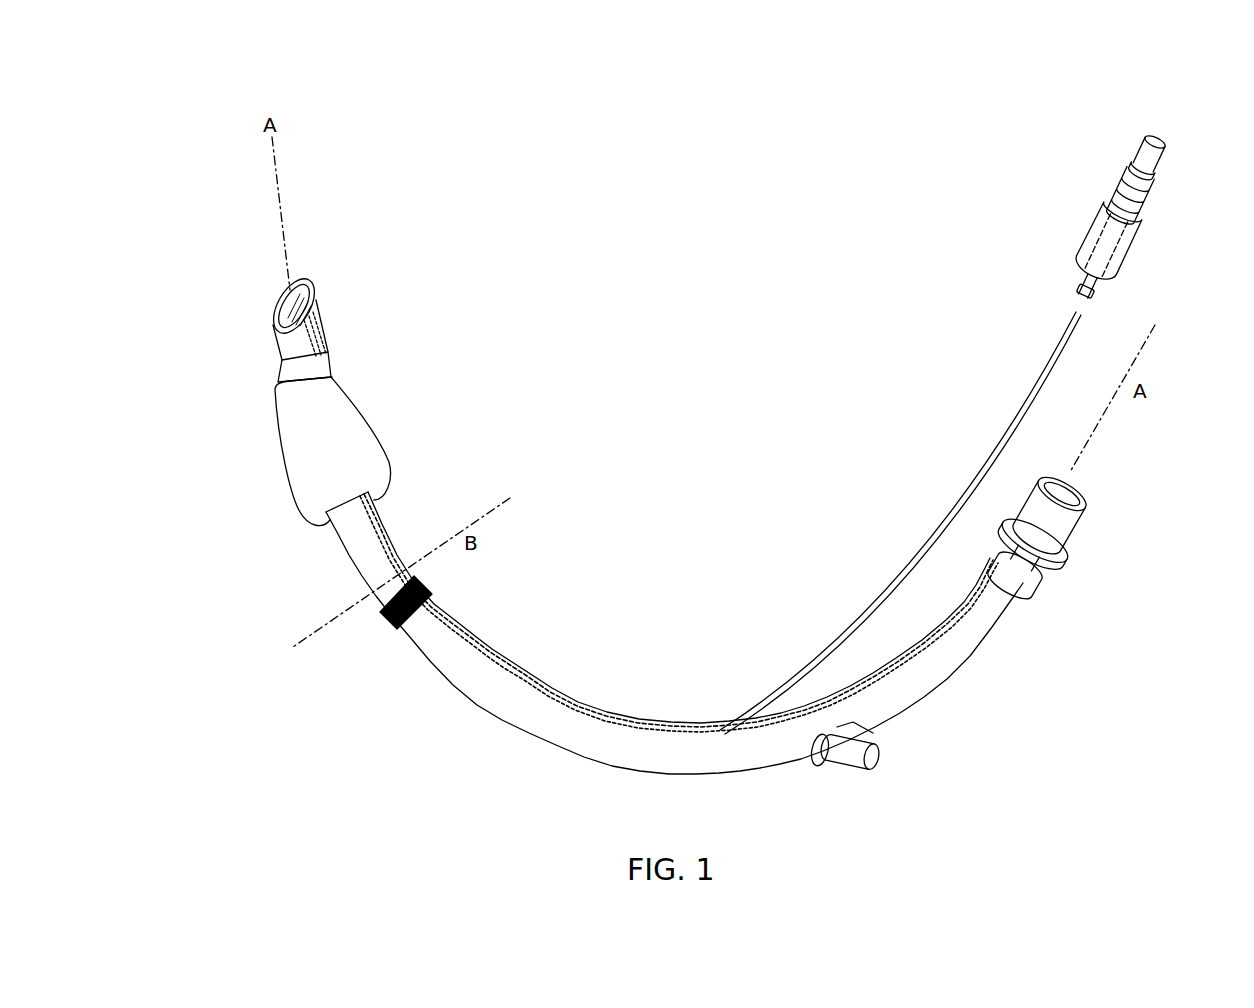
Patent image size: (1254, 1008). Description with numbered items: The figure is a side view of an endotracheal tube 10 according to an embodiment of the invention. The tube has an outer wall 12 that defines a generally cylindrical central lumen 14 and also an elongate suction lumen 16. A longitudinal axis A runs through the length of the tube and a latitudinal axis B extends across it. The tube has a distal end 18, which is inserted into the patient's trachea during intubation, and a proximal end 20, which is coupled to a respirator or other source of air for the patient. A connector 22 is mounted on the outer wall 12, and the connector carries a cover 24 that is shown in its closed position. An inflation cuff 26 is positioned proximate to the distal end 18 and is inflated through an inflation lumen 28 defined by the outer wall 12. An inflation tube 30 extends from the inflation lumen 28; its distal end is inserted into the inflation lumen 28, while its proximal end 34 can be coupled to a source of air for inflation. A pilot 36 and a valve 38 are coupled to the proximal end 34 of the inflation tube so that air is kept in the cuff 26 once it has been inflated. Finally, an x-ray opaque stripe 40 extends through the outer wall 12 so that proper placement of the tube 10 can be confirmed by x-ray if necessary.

The endotracheal tube 10 is at (627, 505).
The outer wall 12 is at (360, 570).
The central lumen 14 is at (302, 283).
The suction lumen 16 is at (278, 308).
The distal end 18 is at (320, 320).
The proximal end 20 is at (1050, 528).
The connector 22 is at (830, 760).
The cover 24 is at (857, 767).
The inflation cuff 26 is at (300, 434).
The inflation lumen 28 is at (450, 617).
The inflation tube 30 is at (903, 567).
The proximal end of the inflation tube 34 is at (1140, 148).
The pilot 36 is at (1123, 252).
The valve 38 is at (1150, 192).
The x-ray opaque stripe 40 is at (382, 527).